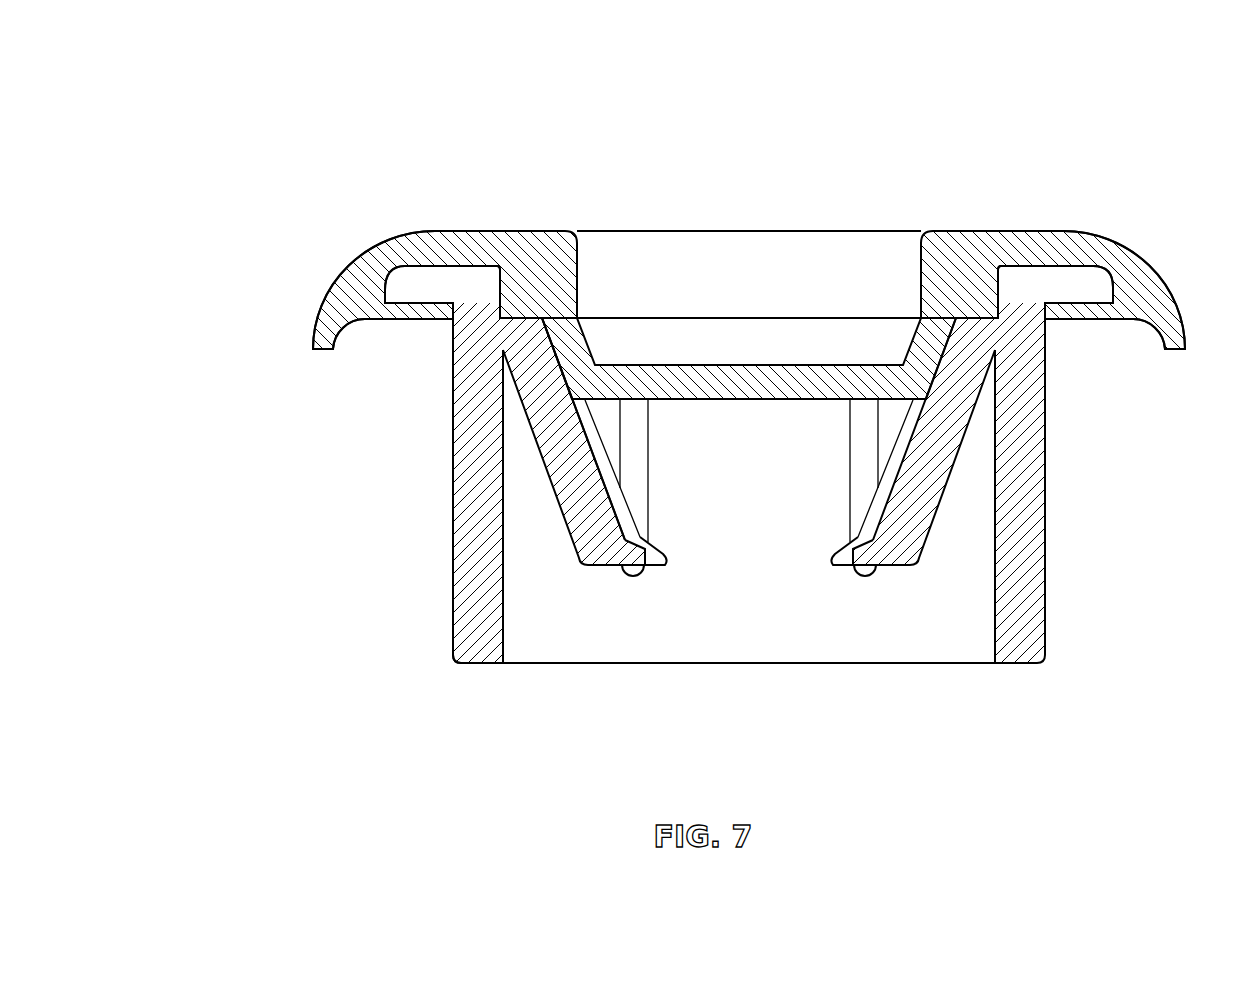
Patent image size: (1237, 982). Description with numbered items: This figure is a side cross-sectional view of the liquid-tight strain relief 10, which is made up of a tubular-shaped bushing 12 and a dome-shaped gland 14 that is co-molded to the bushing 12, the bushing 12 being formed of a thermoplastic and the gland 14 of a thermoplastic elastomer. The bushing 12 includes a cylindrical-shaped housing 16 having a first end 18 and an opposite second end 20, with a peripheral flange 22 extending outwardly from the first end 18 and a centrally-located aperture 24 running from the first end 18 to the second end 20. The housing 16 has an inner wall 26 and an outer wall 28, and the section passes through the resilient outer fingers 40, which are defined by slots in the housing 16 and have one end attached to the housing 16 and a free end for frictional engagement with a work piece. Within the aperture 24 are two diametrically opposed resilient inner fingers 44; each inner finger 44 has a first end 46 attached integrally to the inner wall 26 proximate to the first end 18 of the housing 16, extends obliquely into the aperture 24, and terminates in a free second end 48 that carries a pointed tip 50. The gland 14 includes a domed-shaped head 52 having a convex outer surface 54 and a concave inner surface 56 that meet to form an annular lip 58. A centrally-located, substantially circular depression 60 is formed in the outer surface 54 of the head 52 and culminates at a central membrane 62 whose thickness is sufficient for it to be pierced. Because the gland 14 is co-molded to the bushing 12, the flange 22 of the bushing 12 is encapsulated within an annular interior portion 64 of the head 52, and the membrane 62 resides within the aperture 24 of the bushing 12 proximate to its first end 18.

The liquid-tight strain relief 10 is at (252, 82).
The bushing 12 is at (1030, 594).
The gland 14 is at (1165, 302).
The housing 16 is at (470, 578).
The first end 18 is at (452, 306).
The second end 20 is at (472, 667).
The peripheral flange 22 is at (413, 286).
The aperture 24 is at (740, 647).
The inner wall 26 is at (500, 526).
The outer wall 28 is at (452, 537).
The outer finger 40 is at (767, 487).
The inner finger 44 is at (580, 566).
The first end 46 is at (527, 330).
The second end 48 is at (612, 566).
The pointed tip 50 is at (655, 574).
The head 52 is at (357, 286).
The outer surface 54 is at (410, 230).
The inner surface 56 is at (1118, 338).
The annular lip 58 is at (1172, 350).
The depression 60 is at (771, 313).
The membrane 62 is at (682, 363).
The annular interior portion 64 is at (1022, 258).